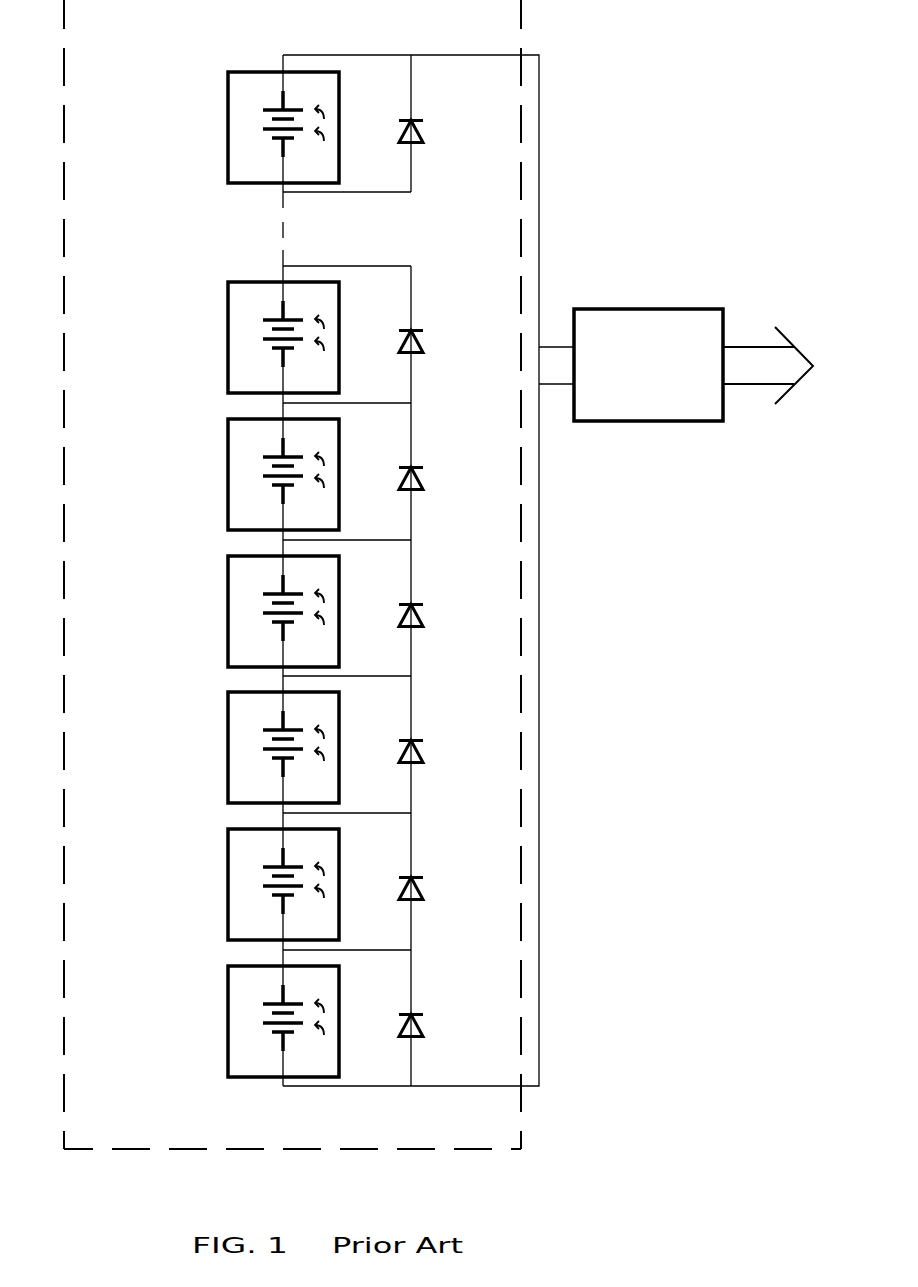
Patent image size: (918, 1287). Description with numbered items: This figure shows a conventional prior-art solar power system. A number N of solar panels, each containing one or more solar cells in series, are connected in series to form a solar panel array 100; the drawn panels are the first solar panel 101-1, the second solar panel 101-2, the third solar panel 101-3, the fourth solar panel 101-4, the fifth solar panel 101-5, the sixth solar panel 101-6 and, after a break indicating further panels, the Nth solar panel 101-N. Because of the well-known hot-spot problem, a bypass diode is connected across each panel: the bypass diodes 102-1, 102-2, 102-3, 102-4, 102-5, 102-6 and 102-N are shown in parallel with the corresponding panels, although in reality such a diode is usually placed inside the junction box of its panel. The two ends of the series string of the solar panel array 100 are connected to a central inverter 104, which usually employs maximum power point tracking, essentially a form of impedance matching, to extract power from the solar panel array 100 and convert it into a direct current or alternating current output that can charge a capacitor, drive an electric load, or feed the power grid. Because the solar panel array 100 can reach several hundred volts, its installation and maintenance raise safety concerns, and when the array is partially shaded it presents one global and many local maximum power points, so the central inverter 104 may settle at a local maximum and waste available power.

The solar panel array 100 is at (143, 36).
The Nth solar panel 101-N is at (220, 147).
The sixth solar panel 101-6 is at (218, 367).
The fifth solar panel 101-5 is at (210, 488).
The fourth solar panel 101-4 is at (210, 617).
The third solar panel 101-3 is at (220, 762).
The second solar panel 101-2 is at (220, 895).
The first solar panel 101-1 is at (220, 1042).
The bypass diode 102-N is at (440, 128).
The bypass diode 102-6 is at (440, 338).
The bypass diode 102-5 is at (440, 475).
The bypass diode 102-4 is at (440, 612).
The bypass diode 102-3 is at (440, 747).
The bypass diode 102-2 is at (430, 885).
The bypass diode 102-1 is at (432, 1022).
The central inverter 104 is at (630, 343).